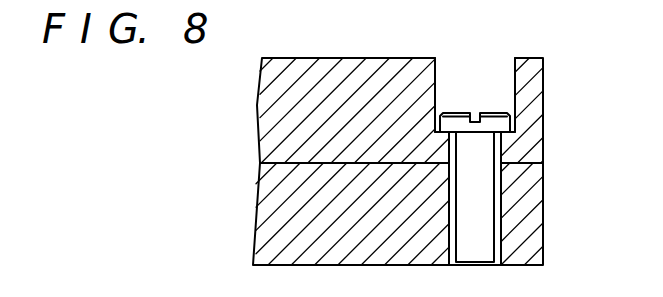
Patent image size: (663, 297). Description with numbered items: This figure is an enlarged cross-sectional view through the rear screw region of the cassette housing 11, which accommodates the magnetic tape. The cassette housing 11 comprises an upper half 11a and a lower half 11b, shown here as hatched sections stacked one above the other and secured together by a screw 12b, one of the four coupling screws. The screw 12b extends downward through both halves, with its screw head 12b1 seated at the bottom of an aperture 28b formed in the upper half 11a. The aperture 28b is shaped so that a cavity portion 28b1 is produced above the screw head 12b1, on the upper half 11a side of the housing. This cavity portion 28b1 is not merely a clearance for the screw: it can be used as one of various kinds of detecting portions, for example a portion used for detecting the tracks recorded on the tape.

The cassette housing 11 is at (454, 161).
The upper half 11a is at (527, 131).
The lower half 11b is at (530, 200).
The screw 12b is at (532, 163).
The screw head 12b1 is at (507, 113).
The aperture 28b is at (436, 144).
The cavity portion 28b1 is at (467, 74).